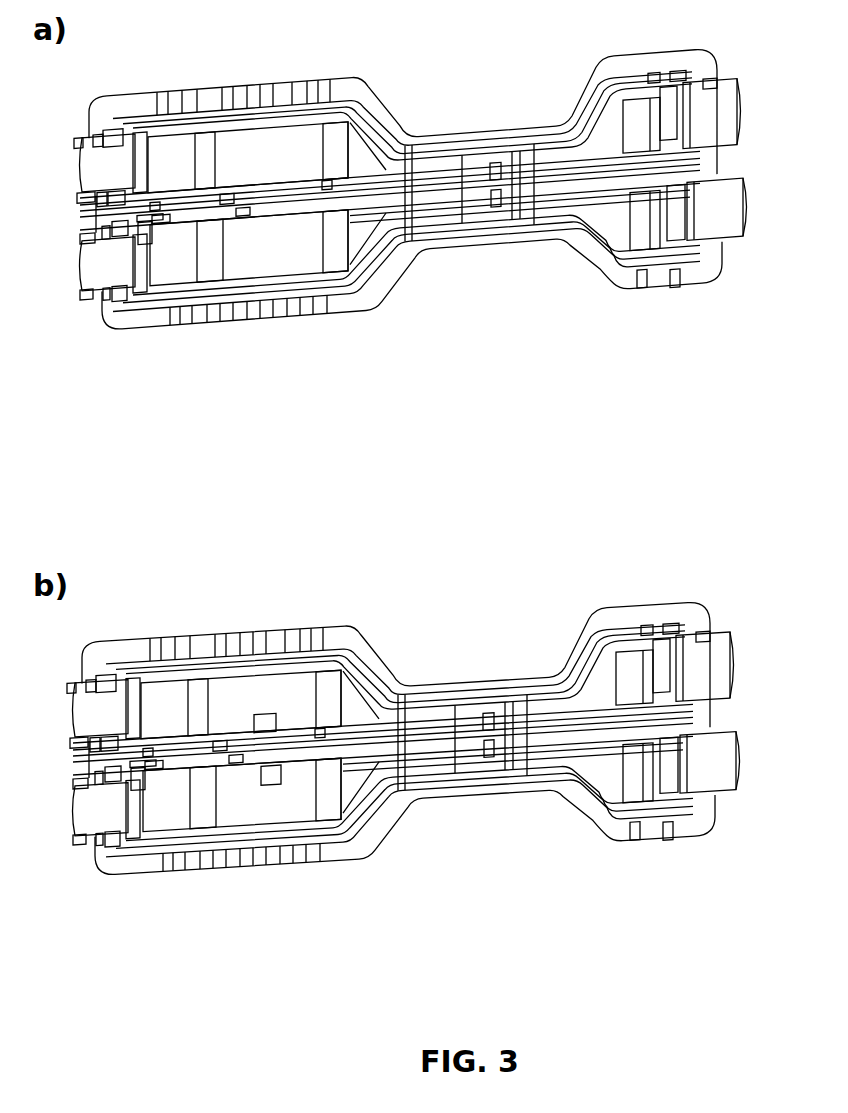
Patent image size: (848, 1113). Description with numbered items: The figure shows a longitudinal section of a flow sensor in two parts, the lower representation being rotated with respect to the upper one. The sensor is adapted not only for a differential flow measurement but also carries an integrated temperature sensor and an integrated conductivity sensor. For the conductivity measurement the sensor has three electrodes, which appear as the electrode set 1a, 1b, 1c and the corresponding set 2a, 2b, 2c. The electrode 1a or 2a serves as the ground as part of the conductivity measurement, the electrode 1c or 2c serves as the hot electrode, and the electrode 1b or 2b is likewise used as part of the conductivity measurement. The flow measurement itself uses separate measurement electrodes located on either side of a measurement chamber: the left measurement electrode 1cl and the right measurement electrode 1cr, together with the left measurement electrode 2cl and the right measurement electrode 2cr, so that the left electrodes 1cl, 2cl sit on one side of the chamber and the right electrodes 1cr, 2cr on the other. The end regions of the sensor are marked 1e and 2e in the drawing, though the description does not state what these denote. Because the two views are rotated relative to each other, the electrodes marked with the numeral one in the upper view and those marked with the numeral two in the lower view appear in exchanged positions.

The ground electrode 1a is at (203, 150).
The conductivity measurement electrode 1b is at (335, 147).
The hot electrode 1c is at (270, 780).
The left measurement electrode 1cl is at (493, 163).
The right measurement electrode 1cr is at (490, 750).
The first housing end part 1e is at (640, 112).
The ground electrode 2a is at (205, 250).
The conductivity measurement electrode 2b is at (333, 250).
The hot electrode 2c is at (267, 715).
The left measurement electrode 2cl is at (497, 205).
The right measurement electrode 2cr is at (490, 707).
The second housing end part 2e is at (648, 232).